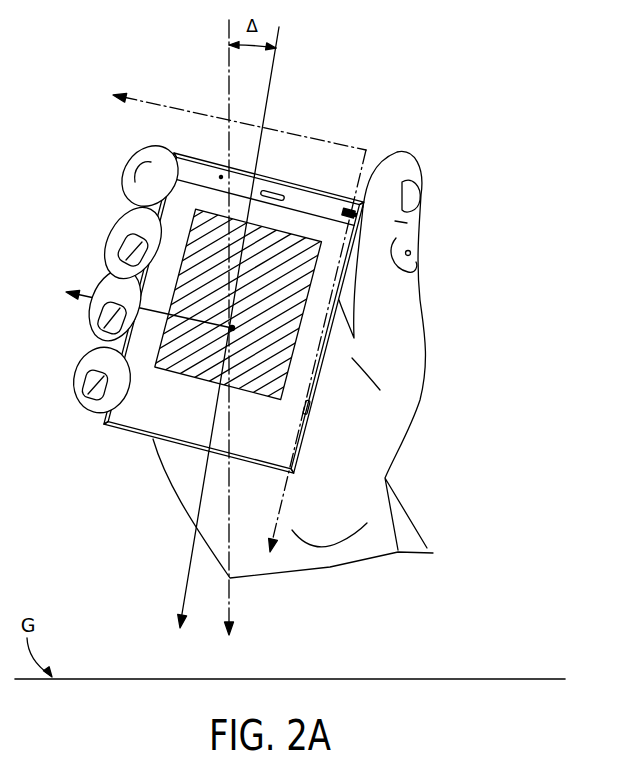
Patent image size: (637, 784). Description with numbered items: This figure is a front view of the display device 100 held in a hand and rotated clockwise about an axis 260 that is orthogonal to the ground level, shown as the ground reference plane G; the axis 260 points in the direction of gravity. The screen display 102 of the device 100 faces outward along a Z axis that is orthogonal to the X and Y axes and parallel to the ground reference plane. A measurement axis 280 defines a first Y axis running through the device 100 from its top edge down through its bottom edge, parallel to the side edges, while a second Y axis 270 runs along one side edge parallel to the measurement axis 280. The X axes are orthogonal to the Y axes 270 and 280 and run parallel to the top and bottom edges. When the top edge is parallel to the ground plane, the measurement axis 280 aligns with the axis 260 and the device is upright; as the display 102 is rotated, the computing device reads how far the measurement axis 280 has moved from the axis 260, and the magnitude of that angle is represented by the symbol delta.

The display device 100 is at (239, 283).
The screen display 102 is at (239, 307).
The axis 260 is at (231, 590).
The second Y axis 270 is at (281, 512).
The measurement axis 280 is at (187, 585).